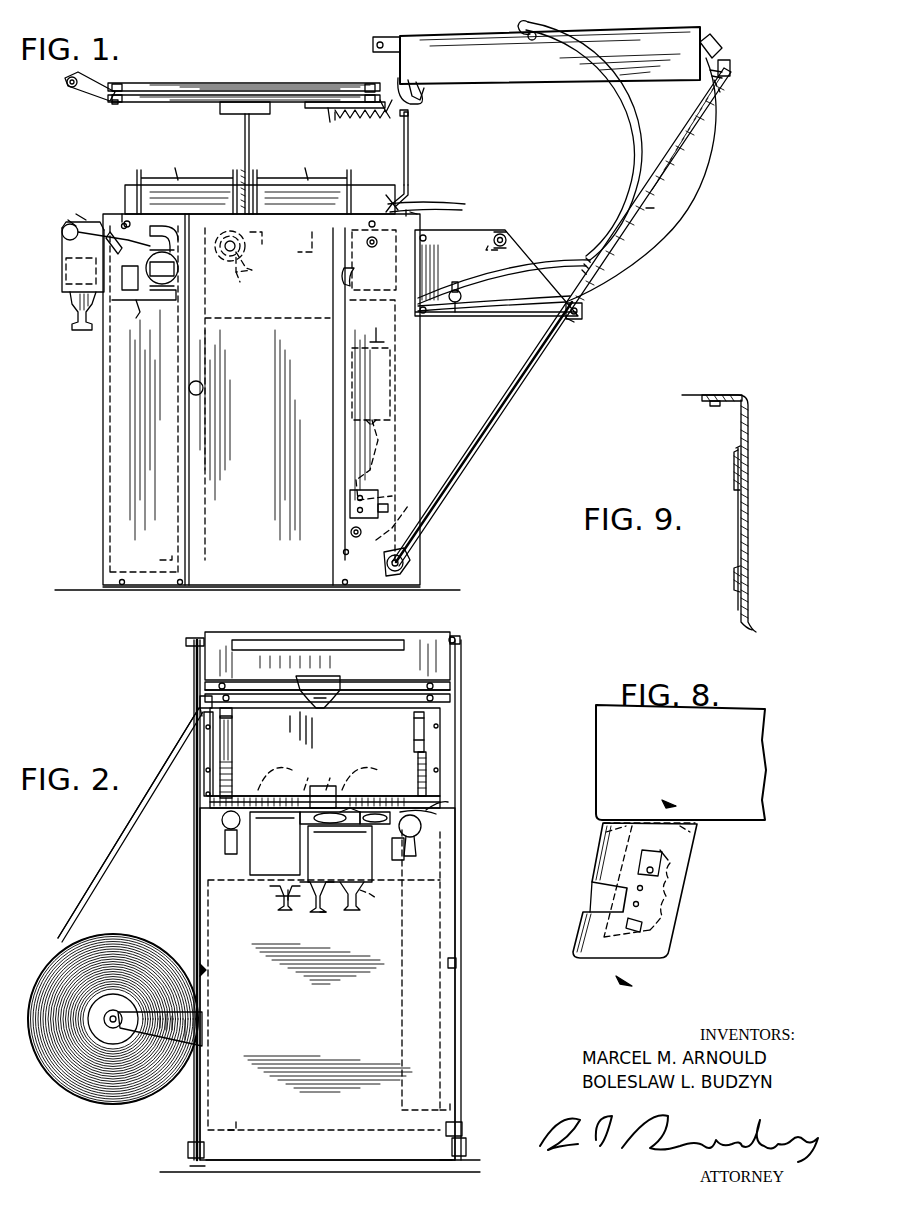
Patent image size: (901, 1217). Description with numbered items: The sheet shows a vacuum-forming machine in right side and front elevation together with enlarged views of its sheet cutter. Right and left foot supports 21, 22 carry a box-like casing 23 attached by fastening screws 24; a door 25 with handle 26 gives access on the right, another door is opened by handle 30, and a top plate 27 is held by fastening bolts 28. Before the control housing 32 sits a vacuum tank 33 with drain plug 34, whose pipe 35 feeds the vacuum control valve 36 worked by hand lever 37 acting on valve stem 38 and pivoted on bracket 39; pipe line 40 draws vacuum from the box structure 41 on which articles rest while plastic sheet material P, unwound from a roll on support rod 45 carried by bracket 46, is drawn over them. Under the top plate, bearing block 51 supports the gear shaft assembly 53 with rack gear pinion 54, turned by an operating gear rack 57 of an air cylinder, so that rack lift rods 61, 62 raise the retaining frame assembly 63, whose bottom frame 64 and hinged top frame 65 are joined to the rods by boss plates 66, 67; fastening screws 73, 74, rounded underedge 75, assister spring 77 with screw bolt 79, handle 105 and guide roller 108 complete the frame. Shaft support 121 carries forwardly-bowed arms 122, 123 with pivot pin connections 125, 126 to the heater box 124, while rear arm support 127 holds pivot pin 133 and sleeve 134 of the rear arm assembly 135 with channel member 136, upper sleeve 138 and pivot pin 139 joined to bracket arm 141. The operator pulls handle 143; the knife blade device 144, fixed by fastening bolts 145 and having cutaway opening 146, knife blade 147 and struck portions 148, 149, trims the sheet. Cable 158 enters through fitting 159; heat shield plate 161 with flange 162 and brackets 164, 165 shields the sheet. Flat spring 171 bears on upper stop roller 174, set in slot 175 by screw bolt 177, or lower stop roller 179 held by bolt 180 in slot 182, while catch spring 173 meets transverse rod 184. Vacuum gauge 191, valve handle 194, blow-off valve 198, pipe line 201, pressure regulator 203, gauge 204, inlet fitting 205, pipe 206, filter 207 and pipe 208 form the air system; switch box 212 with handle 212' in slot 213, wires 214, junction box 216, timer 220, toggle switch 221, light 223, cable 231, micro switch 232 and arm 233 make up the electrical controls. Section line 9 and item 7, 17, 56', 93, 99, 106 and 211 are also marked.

In FIG. 1, the section line 7 is at (608, 208).
In FIG. 8, the section line 9 is at (660, 800).
In FIG. 1, the bracket 17 is at (416, 212).
In FIG. 1, the right hand foot support 21 is at (240, 584).
In FIG. 2, the right hand foot support 21 is at (476, 1168).
In FIG. 2, the left hand foot support 22 is at (190, 1166).
In FIG. 1, the box-like casing 23 is at (410, 415).
In FIG. 2, the box-like casing 23 is at (202, 862).
In FIG. 1, the fastening screws 24 is at (124, 586).
In FIG. 2, the fastening screws 24 is at (188, 1148).
In FIG. 1, the door 25 is at (230, 575).
In FIG. 1, the handle 26 is at (196, 380).
In FIG. 2, the handle 26 is at (458, 966).
In FIG. 1, the top plate 27 is at (102, 214).
In FIG. 1, the fastening bolts 28 is at (126, 212).
In FIG. 2, the handle 30 is at (198, 968).
In FIG. 1, the control housing 32 is at (62, 256).
In FIG. 2, the control housing 32 is at (324, 876).
In FIG. 1, the vacuum tank 33 is at (118, 386).
In FIG. 2, the vacuum tank 33 is at (352, 1122).
In FIG. 1, the drain plug 34 is at (170, 556).
In FIG. 2, the drain plug 34 is at (236, 1130).
In FIG. 1, the pipe 35 is at (176, 296).
In FIG. 1, the vacuum control valve 36 is at (180, 280).
In FIG. 1, the control hand lever 37 is at (62, 246).
In FIG. 2, the control hand lever 37 is at (412, 846).
In FIG. 1, the valve stem 38 is at (136, 268).
In FIG. 1, the bracket 39 is at (140, 312).
In FIG. 1, the pipe line 40 is at (176, 258).
In FIG. 1, the box structure 41 is at (352, 192).
In FIG. 2, the box structure 41 is at (380, 776).
In FIG. 2, the support rod 45 is at (112, 1008).
In FIG. 2, the bracket 46 is at (204, 1020).
In FIG. 1, the right hand bearing block 51 is at (240, 276).
In FIG. 1, the gear shaft assembly 53 is at (252, 268).
In FIG. 1, the right hand rack gear pinion 54 is at (220, 246).
In FIG. 1, the bracket 56' is at (311, 255).
In FIG. 1, the operating gear rack 57 is at (262, 242).
In FIG. 1, the rack lift rod 61 is at (250, 160).
In FIG. 2, the rack lift rod 61 is at (430, 760).
In FIG. 2, the rack lift rod 62 is at (232, 766).
In FIG. 1, the plastic sheet retaining frame assembly 63 is at (213, 75).
In FIG. 2, the plastic sheet retaining frame assembly 63 is at (216, 690).
In FIG. 1, the bottom frame 64 is at (312, 118).
In FIG. 2, the bottom frame 64 is at (436, 694).
In FIG. 1, the top frame 65 is at (284, 84).
In FIG. 2, the top frame 65 is at (440, 688).
In FIG. 1, the boss plate 66 is at (236, 110).
In FIG. 2, the boss plate 66 is at (414, 722).
In FIG. 2, the boss plate 67 is at (228, 716).
In FIG. 1, the front fastening screws 73 is at (118, 104).
In FIG. 2, the front fastening screws 73 is at (230, 700).
In FIG. 1, the rear fastening screws 74 is at (362, 116).
In FIG. 1, the rounded underedge 75 is at (410, 114).
In FIG. 1, the top frame lift assister spring 77 is at (386, 116).
In FIG. 1, the screw bolt 79 is at (328, 122).
In FIG. 1, the pivot 93 is at (118, 90).
In FIG. 2, the pivot 93 is at (216, 686).
In FIG. 1, the pivot 99 is at (368, 86).
In FIG. 1, the handle 105 is at (86, 94).
In FIG. 2, the handle 105 is at (340, 680).
In FIG. 2, the bracket 106 is at (200, 702).
In FIG. 2, the plastic sheet guide roller 108 is at (200, 716).
In FIG. 1, the shaft support 121 is at (408, 566).
In FIG. 2, the shaft support 121 is at (464, 1130).
In FIG. 1, the front heater supporting arm 122 is at (528, 378).
In FIG. 2, the front heater supporting arm 122 is at (460, 830).
In FIG. 2, the front heater supporting arm 123 is at (196, 822).
In FIG. 1, the heater box 124 is at (524, 82).
In FIG. 2, the heater box 124 is at (396, 632).
In FIG. 8, the heater box 124 is at (594, 756).
In FIG. 1, the pivot pin connection 125 is at (600, 48).
In FIG. 2, the pivot pin connection 125 is at (460, 638).
In FIG. 2, the pivot pin connection 126 is at (200, 640).
In FIG. 1, the rear arm support 127 is at (450, 318).
In FIG. 1, the pivot pin 133 is at (590, 312).
In FIG. 1, the sleeve 134 is at (574, 322).
In FIG. 1, the rear heater supporting arm assembly 135 is at (668, 136).
In FIG. 1, the channel member 136 is at (654, 172).
In FIG. 1, the sleeve 138 is at (726, 82).
In FIG. 1, the pivot pin 139 is at (728, 78).
In FIG. 1, the bracket arm 141 is at (732, 66).
In FIG. 1, the handle 143 is at (392, 60).
In FIG. 2, the handle 143 is at (318, 640).
In FIG. 1, the knife blade device 144 is at (418, 100).
In FIG. 9, the knife blade device 144 is at (748, 412).
In FIG. 8, the knife blade device 144 is at (596, 860).
In FIG. 9, the fastening bolts 145 is at (716, 404).
In FIG. 8, the fastening bolts 145 is at (600, 834).
In FIG. 8, the cutaway opening 146 is at (598, 896).
In FIG. 1, the knife blade 147 is at (416, 90).
In FIG. 9, the knife blade 147 is at (738, 534).
In FIG. 8, the knife blade 147 is at (580, 906).
In FIG. 9, the inwardly-struck portion 148 is at (734, 580).
In FIG. 8, the inwardly-struck portion 148 is at (640, 928).
In FIG. 9, the inwardly-struck portion 149 is at (730, 470).
In FIG. 8, the inwardly-struck portion 149 is at (664, 858).
In FIG. 1, the three-wire cable 158 is at (698, 186).
In FIG. 1, the fitting 159 is at (714, 44).
In FIG. 1, the heat shield plate structure 161 is at (408, 146).
In FIG. 2, the heat shield plate structure 161 is at (334, 742).
In FIG. 1, the reinforcing flange 162 is at (414, 180).
In FIG. 2, the right hand bracket 164 is at (442, 756).
In FIG. 2, the left hand bracket 165 is at (202, 776).
In FIG. 1, the flat movement-resisting spring 171 is at (556, 244).
In FIG. 1, the flat catch spring 173 is at (428, 202).
In FIG. 2, the flat catch spring 173 is at (322, 796).
In FIG. 1, the upper stop roller 174 is at (500, 232).
In FIG. 1, the elongated slot 175 is at (502, 246).
In FIG. 1, the screw bolt 177 is at (506, 236).
In FIG. 1, the lower stop roller 179 is at (462, 296).
In FIG. 1, the bolt 180 is at (460, 294).
In FIG. 1, the elongated slot 182 is at (454, 284).
In FIG. 1, the transverse rod 184 is at (586, 262).
In FIG. 2, the transverse rod 184 is at (440, 802).
In FIG. 2, the vacuum gauge 191 is at (436, 814).
In FIG. 2, the handle 194 is at (226, 846).
In FIG. 1, the blow-off valve 198 is at (112, 236).
In FIG. 1, the pipe line 201 is at (138, 226).
In FIG. 2, the pressure regulator 203 is at (294, 916).
In FIG. 2, the air pressure gauge 204 is at (264, 886).
In FIG. 1, the air inlet fitting 205 is at (360, 536).
In FIG. 2, the air inlet fitting 205 is at (450, 1108).
In FIG. 1, the pipe 206 is at (222, 330).
In FIG. 2, the pipe 206 is at (398, 1006).
In FIG. 1, the air filter 207 is at (70, 300).
In FIG. 2, the air filter 207 is at (352, 916).
In FIG. 2, the pipe 208 is at (330, 912).
In FIG. 1, the pin 211 is at (372, 254).
In FIG. 1, the main safety switch box 212 is at (410, 340).
In FIG. 1, the switch handle 212' is at (374, 270).
In FIG. 1, the vertical slot 213 is at (340, 284).
In FIG. 1, the cable wires 214 is at (400, 360).
In FIG. 1, the junction box 216 is at (378, 380).
In FIG. 1, the electric timer 220 is at (66, 231).
In FIG. 2, the electric timer 220 is at (358, 822).
In FIG. 1, the toggle switch 221 is at (70, 222).
In FIG. 1, the timer operated light 223 is at (78, 216).
In FIG. 1, the two wire cable 231 is at (400, 436).
In FIG. 1, the micro switch 232 is at (406, 464).
In FIG. 1, the arm 233 is at (408, 510).
In FIG. 2, the plastic sheet material P is at (130, 820).